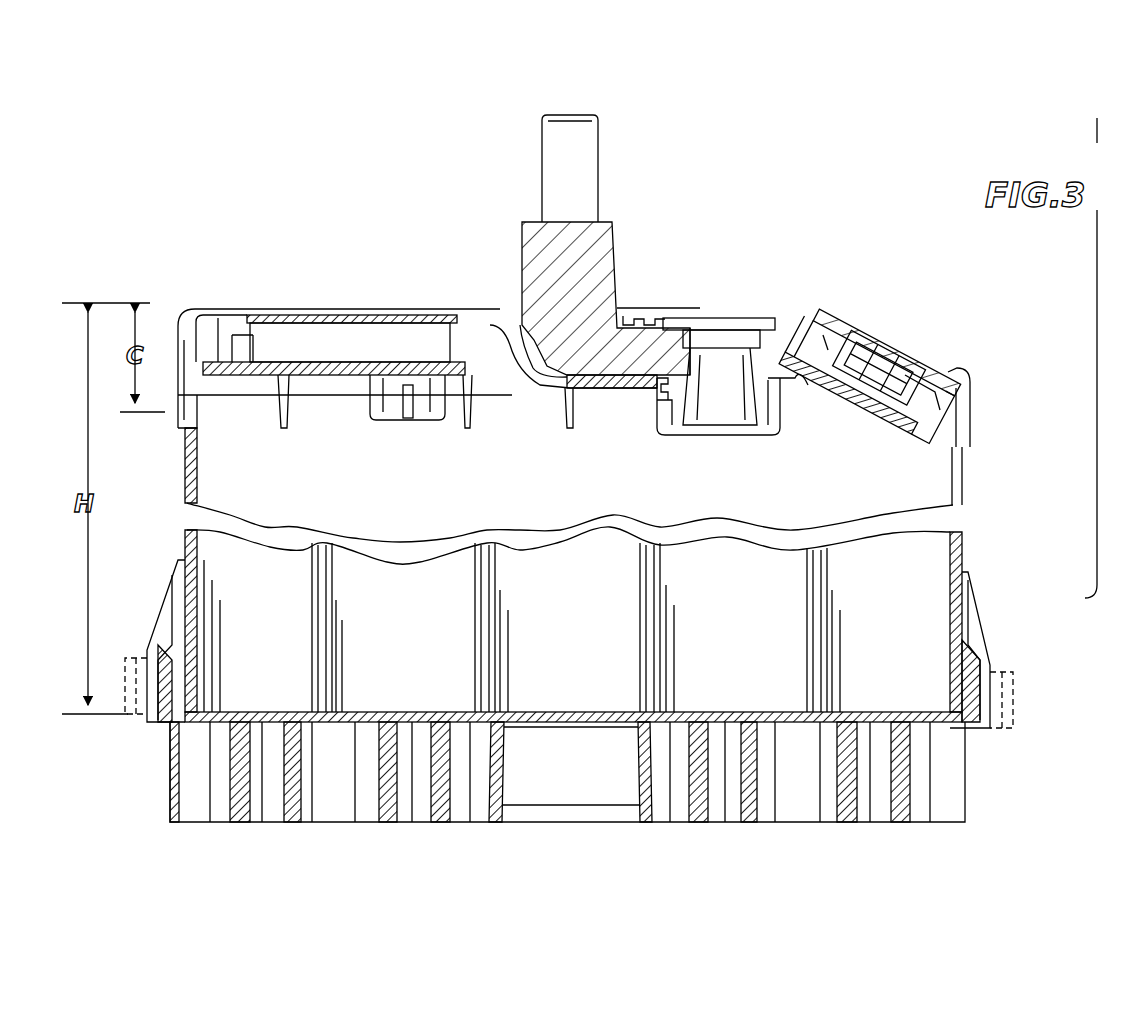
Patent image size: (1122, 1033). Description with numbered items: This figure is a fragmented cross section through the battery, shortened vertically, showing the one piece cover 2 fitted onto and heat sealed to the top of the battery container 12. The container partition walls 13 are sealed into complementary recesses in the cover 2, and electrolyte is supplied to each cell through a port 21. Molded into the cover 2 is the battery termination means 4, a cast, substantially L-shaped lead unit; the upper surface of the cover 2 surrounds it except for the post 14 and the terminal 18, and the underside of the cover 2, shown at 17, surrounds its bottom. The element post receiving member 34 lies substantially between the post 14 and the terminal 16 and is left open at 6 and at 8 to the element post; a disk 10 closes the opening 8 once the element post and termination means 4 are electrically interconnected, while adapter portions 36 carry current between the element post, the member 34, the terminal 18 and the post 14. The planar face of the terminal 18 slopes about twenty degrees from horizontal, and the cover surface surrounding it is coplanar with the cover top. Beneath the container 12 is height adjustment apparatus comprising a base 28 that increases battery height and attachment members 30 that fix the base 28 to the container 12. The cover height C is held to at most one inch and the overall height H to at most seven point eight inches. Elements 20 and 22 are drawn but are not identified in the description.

The cover 2 is at (972, 407).
The battery termination means 4 is at (792, 307).
The opening 6 is at (680, 434).
The opening 8 is at (758, 318).
The disk 10 is at (680, 318).
The battery container 12 is at (910, 467).
The container partition walls 13 is at (478, 605).
The post 14 is at (612, 238).
The terminal 16 is at (925, 362).
The underside of cover 17 is at (838, 412).
The terminal 18 is at (882, 346).
The plate 20 is at (323, 314).
The port 21 is at (370, 412).
The cylinder 22 is at (592, 155).
The base 28 is at (773, 817).
The attachment members 30 is at (980, 633).
The element post receiving member 34 is at (722, 318).
The adapter portions 36 is at (622, 304).